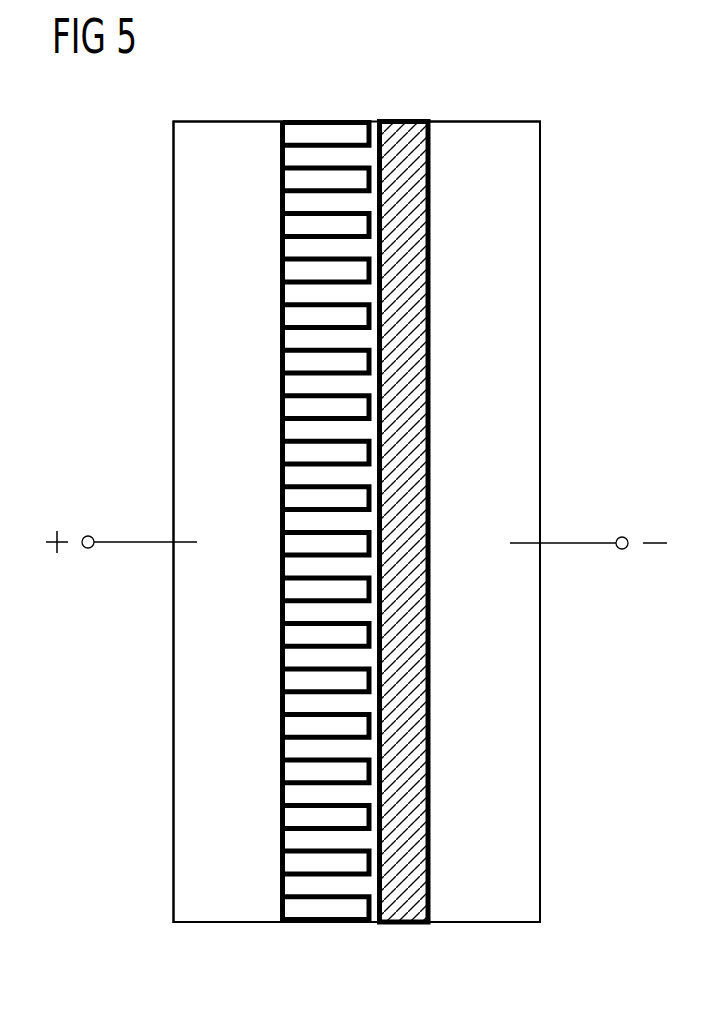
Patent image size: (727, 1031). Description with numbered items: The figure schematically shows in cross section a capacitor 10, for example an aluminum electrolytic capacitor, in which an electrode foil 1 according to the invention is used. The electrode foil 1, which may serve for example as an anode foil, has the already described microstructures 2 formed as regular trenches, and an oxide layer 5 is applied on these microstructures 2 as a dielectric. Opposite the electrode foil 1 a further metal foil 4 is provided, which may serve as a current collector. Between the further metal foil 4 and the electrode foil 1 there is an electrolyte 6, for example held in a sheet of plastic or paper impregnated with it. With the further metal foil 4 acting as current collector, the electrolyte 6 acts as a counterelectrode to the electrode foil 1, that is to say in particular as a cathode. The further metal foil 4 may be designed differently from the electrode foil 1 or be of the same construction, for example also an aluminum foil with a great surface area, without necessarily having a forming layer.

The electrochemical energy storage device 10 is at (578, 132).
The electrode foil 1 is at (201, 762).
The microstructures 2 is at (335, 203).
The electrolyte 6 is at (302, 208).
The oxide layer 5 is at (431, 213).
The further metal foil 4 is at (512, 406).